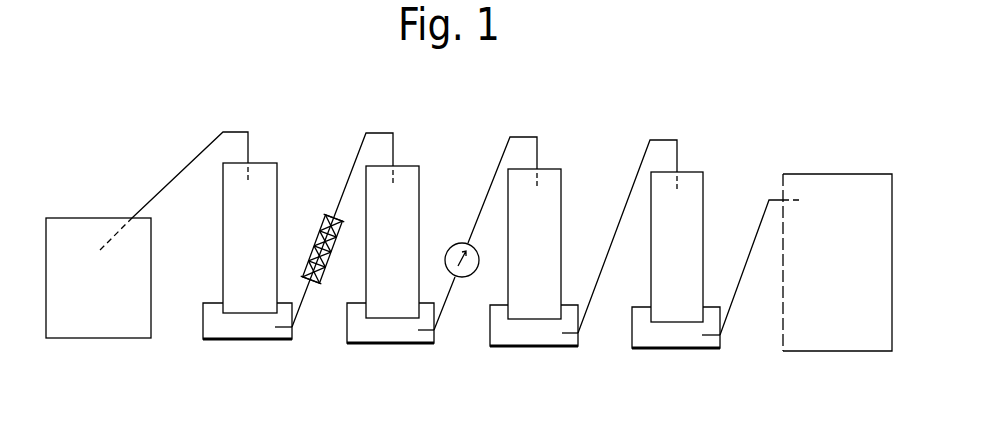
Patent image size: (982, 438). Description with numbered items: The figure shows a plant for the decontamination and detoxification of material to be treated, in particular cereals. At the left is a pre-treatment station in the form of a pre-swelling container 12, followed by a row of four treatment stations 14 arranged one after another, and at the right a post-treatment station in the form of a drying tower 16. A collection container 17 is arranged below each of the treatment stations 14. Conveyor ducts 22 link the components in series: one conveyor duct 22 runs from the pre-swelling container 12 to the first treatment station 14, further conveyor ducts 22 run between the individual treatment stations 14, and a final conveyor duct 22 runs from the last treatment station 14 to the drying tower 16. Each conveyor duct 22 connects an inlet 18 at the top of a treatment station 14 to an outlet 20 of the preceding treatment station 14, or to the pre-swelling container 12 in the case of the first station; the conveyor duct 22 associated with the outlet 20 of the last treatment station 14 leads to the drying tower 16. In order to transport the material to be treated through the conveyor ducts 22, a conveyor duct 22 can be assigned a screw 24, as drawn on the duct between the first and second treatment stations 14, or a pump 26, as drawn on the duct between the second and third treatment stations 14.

The pre-swelling container 12 is at (88, 227).
The treatment station 14 is at (267, 198).
The drying tower 16 is at (833, 195).
The collection container 17 is at (263, 328).
The inlet 18 is at (248, 160).
The outlet 20 is at (237, 317).
The conveyor duct 22 is at (158, 190).
The screw 24 is at (320, 224).
The pump 26 is at (454, 247).